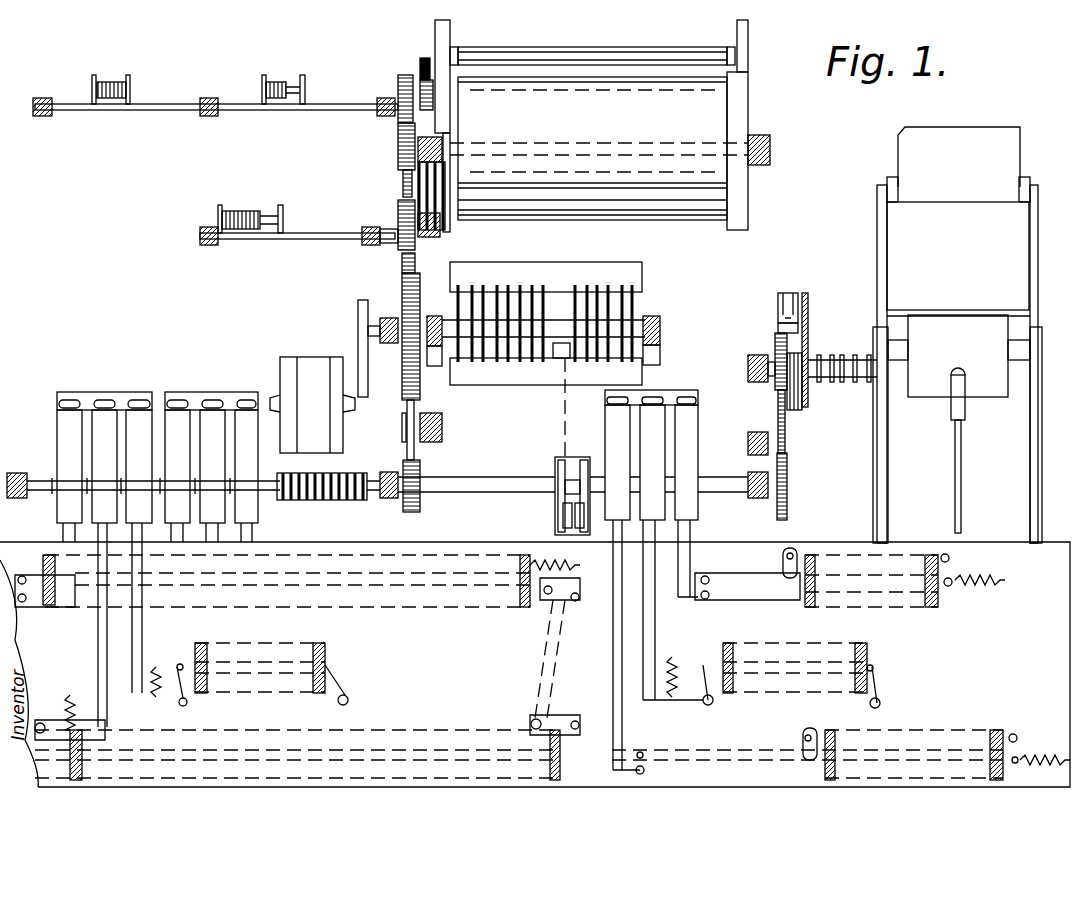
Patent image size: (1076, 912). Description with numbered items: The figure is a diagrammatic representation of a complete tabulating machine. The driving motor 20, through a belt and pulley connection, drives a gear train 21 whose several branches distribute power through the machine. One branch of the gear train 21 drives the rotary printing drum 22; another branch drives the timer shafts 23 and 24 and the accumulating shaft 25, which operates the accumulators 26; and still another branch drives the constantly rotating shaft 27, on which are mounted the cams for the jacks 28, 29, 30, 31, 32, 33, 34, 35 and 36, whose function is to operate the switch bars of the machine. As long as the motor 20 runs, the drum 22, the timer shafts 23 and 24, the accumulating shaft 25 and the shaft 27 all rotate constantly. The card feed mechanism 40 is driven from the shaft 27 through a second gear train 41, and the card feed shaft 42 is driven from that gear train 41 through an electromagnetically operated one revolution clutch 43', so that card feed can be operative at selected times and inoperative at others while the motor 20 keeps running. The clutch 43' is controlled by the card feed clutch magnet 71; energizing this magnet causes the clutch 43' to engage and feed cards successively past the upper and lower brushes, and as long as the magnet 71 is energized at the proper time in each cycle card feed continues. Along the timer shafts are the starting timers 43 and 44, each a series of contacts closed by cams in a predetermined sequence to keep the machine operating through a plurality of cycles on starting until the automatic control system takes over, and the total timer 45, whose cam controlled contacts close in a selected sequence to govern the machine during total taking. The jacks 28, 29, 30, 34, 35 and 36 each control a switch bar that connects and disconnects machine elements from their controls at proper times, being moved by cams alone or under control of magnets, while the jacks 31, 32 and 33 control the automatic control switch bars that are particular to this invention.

The driving motor 20 is at (305, 365).
The gear train 21 is at (402, 290).
The rotary printing drum 22 is at (712, 103).
The timer shaft 23 is at (330, 104).
The timer shaft 24 is at (310, 233).
The accumulating shaft 25 is at (553, 330).
The accumulators 26 is at (510, 290).
The constantly rotating shaft 27 is at (480, 481).
The jack 28 is at (65, 410).
The jack 29 is at (97, 410).
The jack 30 is at (133, 410).
The jack 31 is at (174, 410).
The jack 32 is at (208, 410).
The jack 33 is at (248, 410).
The jack 34 is at (615, 405).
The jack 35 is at (652, 405).
The jack 36 is at (688, 410).
The card feed mechanism 40 is at (900, 228).
The gear train 41 is at (787, 427).
The card feed shaft 42 is at (870, 355).
The starting timer 43 is at (119, 74).
The card feed clutch 43' is at (821, 347).
The starting timer 44 is at (288, 78).
The total timer 45 is at (240, 215).
The card feed clutch magnet 71 is at (778, 300).